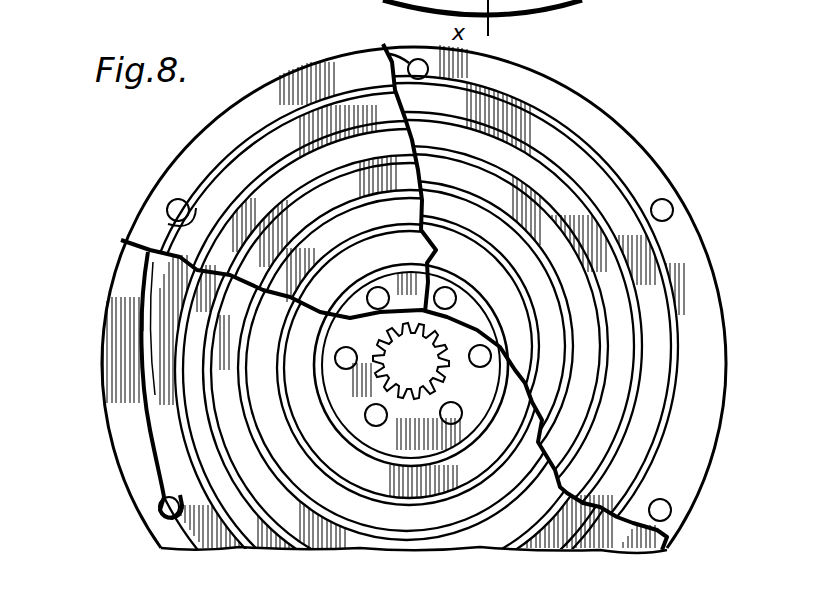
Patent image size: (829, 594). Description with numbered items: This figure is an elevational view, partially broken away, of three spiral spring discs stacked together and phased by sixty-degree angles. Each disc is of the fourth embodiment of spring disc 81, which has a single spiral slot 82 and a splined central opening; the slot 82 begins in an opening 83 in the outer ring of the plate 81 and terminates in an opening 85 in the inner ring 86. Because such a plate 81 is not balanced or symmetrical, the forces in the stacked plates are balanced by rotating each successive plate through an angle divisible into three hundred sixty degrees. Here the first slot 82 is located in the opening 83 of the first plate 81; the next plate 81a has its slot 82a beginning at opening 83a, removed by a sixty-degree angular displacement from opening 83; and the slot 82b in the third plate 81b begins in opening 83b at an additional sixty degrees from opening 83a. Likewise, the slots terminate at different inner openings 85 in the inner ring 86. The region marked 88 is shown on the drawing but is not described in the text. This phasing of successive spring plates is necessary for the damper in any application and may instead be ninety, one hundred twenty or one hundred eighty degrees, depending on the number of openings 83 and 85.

The spring disc 81 is at (123, 403).
The next plate 81a is at (182, 192).
The third plate 81b is at (577, 103).
The spiral slot 82 is at (143, 297).
The slot 82a is at (272, 117).
The slot 82b is at (665, 263).
The opening 83 is at (160, 505).
The opening 83a is at (167, 205).
The opening 83b is at (383, 45).
The opening 85 is at (452, 293).
The inner ring 86 is at (470, 312).
The shaded surface 88 is at (158, 350).